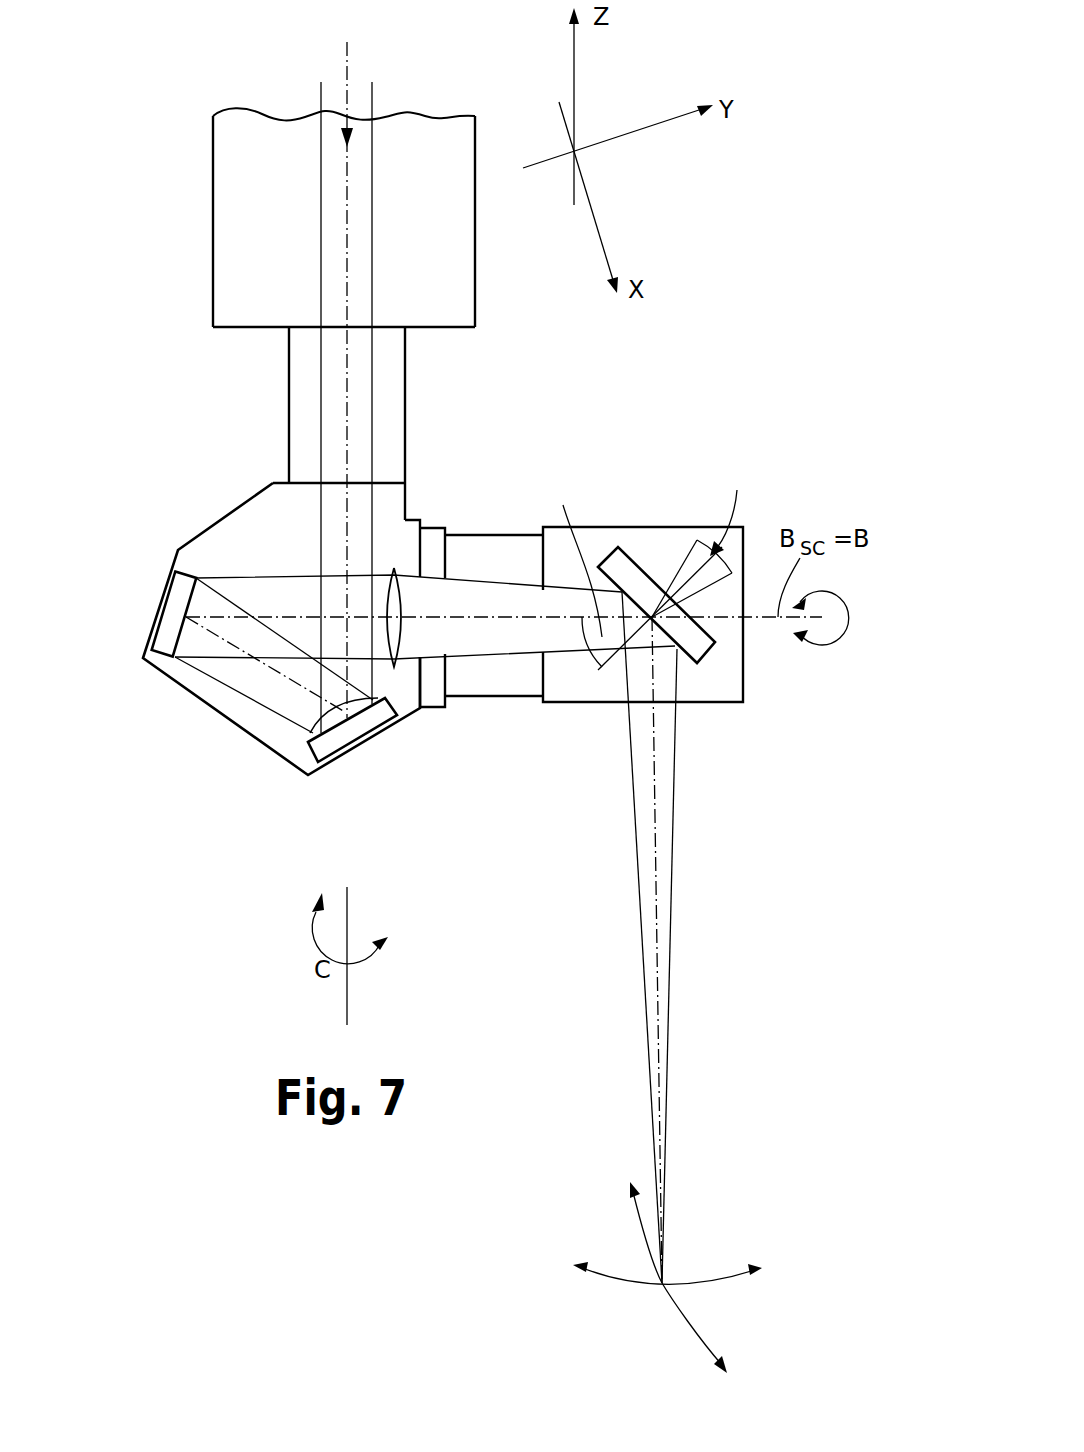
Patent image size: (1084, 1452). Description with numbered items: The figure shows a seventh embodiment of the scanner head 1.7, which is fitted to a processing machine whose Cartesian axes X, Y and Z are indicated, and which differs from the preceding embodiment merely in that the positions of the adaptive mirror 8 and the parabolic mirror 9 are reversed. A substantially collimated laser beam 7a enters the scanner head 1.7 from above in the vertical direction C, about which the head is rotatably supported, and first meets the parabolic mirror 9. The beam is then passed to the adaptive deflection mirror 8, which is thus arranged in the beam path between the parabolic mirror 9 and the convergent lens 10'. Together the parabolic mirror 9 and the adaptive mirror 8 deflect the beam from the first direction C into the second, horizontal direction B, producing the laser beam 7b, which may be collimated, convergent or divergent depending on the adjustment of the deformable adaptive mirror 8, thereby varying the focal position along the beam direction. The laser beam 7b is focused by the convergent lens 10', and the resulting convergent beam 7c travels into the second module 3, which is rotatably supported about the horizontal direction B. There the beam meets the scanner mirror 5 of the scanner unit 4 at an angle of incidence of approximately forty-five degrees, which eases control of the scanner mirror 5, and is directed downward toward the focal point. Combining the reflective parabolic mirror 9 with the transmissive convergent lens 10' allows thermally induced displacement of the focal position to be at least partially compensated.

The scanner head 1.7 is at (738, 311).
The second module 3 is at (515, 725).
The laser beam 7a is at (347, 392).
The laser beam 7b is at (268, 612).
The convergent beam 7c is at (505, 617).
The adaptive deflection mirror 8 is at (178, 600).
The parabolic mirror 9 is at (360, 737).
The convergent lens 10' is at (426, 573).
The scanner unit 4 is at (640, 527).
The scanner mirror 5 is at (710, 653).